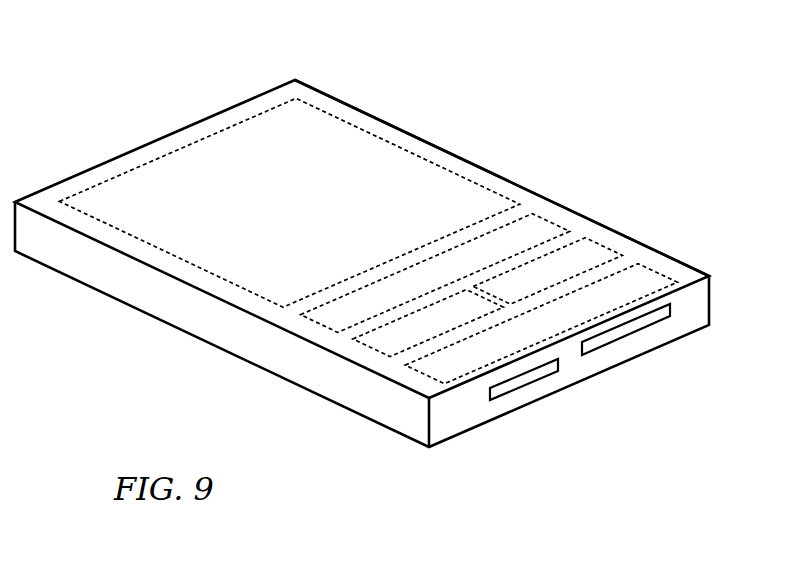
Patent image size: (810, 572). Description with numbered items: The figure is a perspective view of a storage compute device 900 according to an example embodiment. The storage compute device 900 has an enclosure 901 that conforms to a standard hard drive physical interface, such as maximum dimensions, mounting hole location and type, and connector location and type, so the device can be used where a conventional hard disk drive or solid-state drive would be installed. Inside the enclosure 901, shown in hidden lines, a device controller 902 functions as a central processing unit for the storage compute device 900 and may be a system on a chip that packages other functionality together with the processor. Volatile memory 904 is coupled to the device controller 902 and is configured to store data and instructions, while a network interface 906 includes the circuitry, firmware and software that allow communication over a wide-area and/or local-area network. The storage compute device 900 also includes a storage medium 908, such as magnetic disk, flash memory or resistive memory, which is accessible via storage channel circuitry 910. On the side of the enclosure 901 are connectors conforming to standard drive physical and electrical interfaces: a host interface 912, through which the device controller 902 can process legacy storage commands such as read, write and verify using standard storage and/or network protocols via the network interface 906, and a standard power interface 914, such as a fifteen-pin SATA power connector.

The storage compute device 900 is at (187, 335).
The enclosure 901 is at (465, 157).
The device controller 902 is at (607, 250).
The volatile memory 904 is at (542, 218).
The network interface 906 is at (368, 344).
The storage medium 908 is at (294, 78).
The storage channel circuitry 910 is at (660, 277).
The host interface 912 is at (528, 385).
The power interface 914 is at (638, 333).